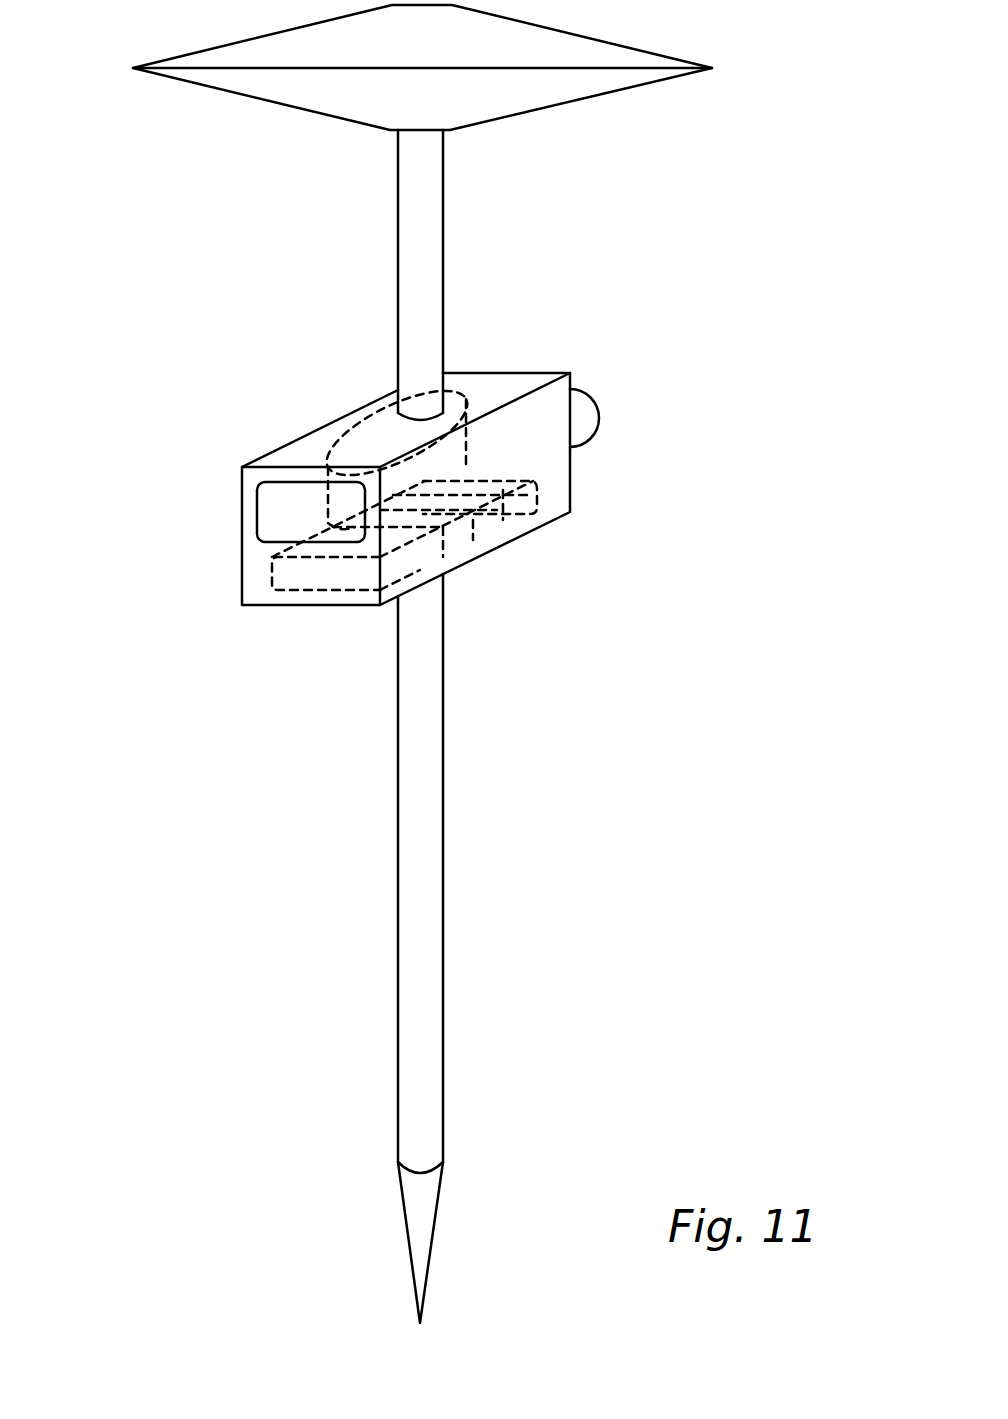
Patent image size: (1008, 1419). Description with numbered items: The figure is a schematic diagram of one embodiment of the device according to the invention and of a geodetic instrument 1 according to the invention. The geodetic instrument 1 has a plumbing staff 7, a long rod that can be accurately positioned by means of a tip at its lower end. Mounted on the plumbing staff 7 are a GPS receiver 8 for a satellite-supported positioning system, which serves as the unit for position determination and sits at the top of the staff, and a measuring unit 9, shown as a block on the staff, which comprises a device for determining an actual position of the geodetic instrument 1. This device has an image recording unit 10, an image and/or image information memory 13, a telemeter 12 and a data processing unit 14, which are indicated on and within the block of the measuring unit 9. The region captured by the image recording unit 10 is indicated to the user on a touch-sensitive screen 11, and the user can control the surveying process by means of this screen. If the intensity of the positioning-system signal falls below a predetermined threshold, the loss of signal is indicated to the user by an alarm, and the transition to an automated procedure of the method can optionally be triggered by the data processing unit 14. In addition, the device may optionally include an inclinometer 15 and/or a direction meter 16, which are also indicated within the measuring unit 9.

The geodetic instrument 1 is at (272, 692).
The plumbing staff 7 is at (422, 215).
The GPS receiver 8 is at (423, 95).
The measuring unit 9 is at (510, 455).
The image recording unit 10 is at (582, 418).
The touch-sensitive screen 11 is at (293, 500).
The telemeter 12 is at (393, 437).
The image and/or image information memory 13 is at (522, 508).
The data processing unit 14 is at (493, 522).
The inclinometer 15 is at (460, 537).
The direction meter 16 is at (397, 567).